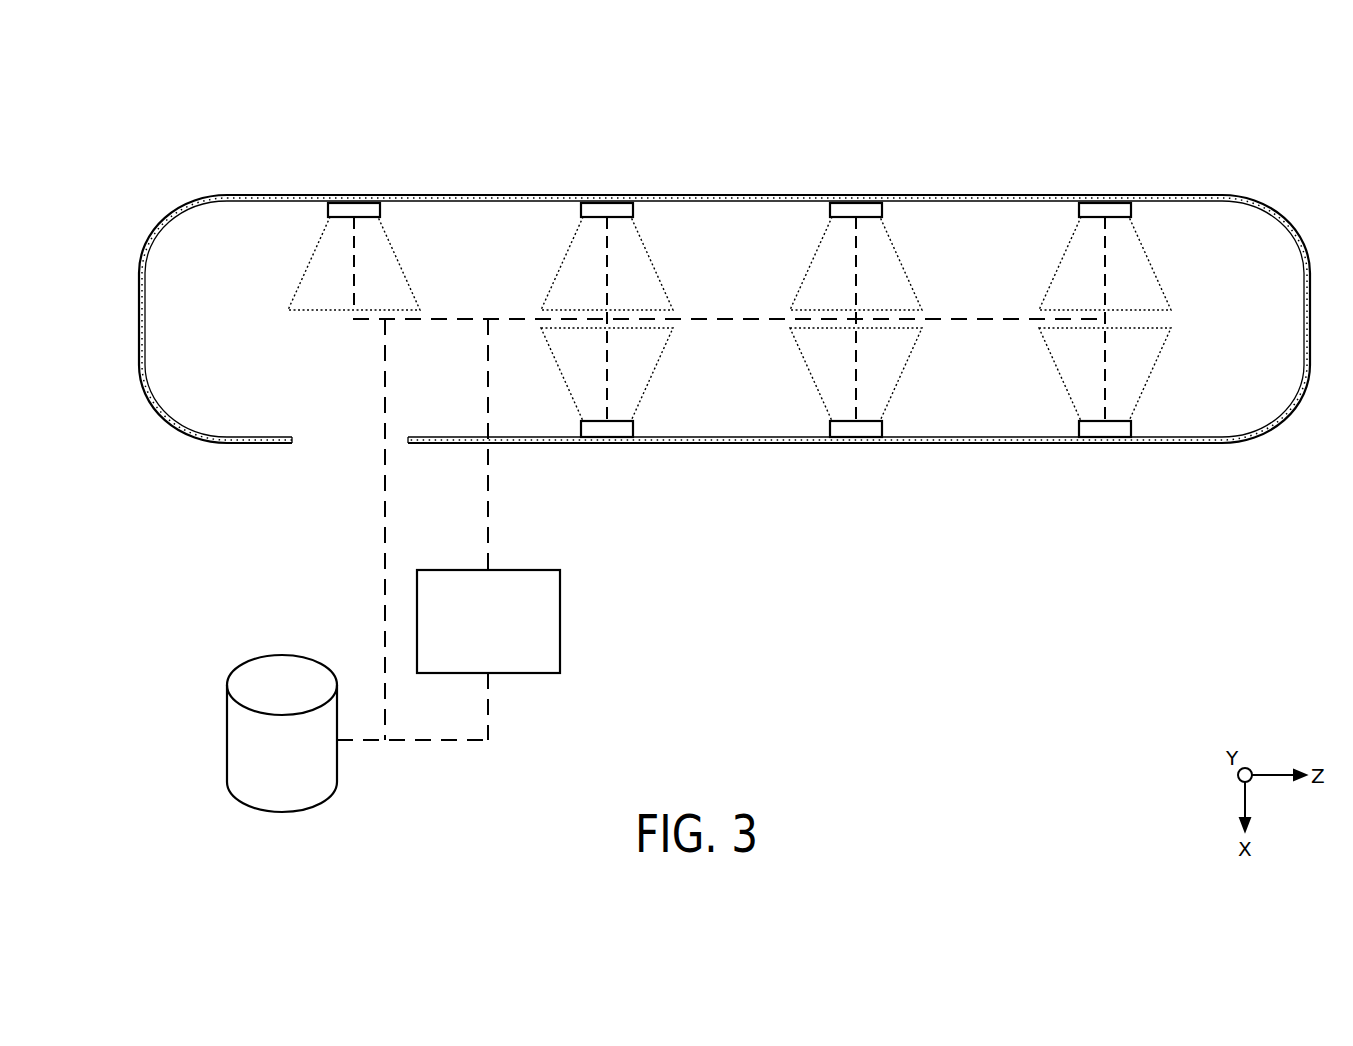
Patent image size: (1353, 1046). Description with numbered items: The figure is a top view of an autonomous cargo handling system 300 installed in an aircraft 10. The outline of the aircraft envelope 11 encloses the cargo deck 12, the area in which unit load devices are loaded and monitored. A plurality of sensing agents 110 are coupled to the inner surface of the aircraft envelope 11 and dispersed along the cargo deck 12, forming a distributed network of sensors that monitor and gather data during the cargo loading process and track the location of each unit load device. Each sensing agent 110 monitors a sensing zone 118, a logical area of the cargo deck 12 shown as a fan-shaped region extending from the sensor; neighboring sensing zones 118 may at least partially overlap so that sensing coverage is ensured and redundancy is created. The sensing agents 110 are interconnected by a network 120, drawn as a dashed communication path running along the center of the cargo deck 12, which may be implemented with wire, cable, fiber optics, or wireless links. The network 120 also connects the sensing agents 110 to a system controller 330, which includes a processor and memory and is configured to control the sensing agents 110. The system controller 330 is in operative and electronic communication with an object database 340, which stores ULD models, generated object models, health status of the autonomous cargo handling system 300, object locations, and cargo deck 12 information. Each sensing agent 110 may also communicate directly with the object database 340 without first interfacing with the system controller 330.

The conveyor system 10 is at (131, 252).
The aircraft envelope 11 is at (699, 196).
The cargo deck 12 is at (348, 391).
The sensing agent 110 is at (726, 323).
The sensing zone 118 is at (731, 320).
The network 120 is at (962, 320).
The autonomous cargo handling system 300 is at (477, 116).
The system controller 330 is at (560, 605).
The object database 340 is at (233, 725).